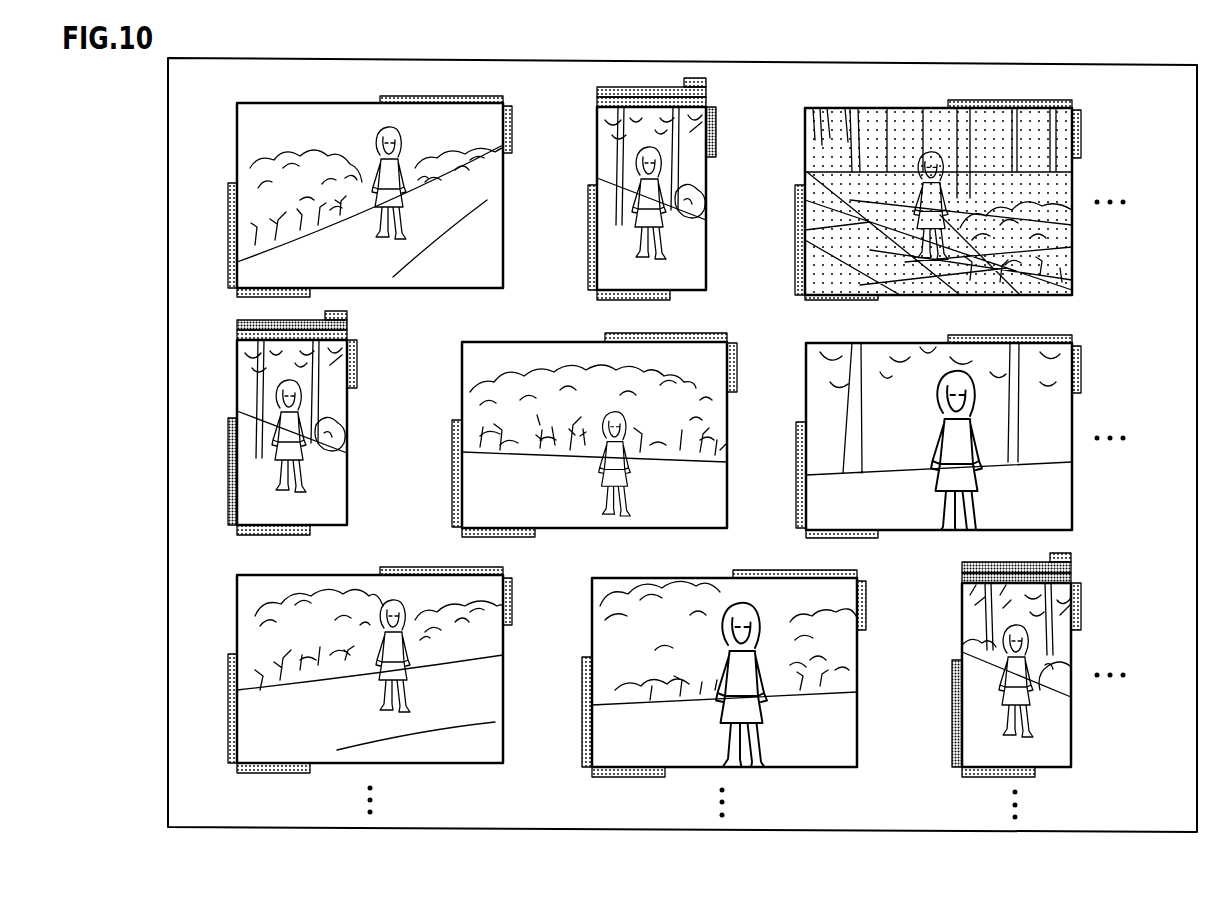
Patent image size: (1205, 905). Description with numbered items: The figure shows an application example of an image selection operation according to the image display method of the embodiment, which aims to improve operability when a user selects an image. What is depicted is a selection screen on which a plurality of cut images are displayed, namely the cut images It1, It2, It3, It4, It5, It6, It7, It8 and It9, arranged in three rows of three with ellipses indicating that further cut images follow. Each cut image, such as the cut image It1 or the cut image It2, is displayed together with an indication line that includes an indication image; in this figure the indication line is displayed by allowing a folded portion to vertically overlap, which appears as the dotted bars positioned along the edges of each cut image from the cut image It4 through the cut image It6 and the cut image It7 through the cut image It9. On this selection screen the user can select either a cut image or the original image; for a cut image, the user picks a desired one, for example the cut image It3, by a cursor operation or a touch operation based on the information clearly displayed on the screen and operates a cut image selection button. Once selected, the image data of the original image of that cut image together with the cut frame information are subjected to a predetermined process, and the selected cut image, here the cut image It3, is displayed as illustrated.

The cut image It1 is at (237, 118).
The cut image It2 is at (595, 121).
The cut image It3 is at (805, 121).
The cut image It4 is at (237, 353).
The cut image It5 is at (462, 356).
The cut image It6 is at (804, 358).
The cut image It7 is at (237, 590).
The cut image It8 is at (592, 592).
The cut image It9 is at (961, 595).